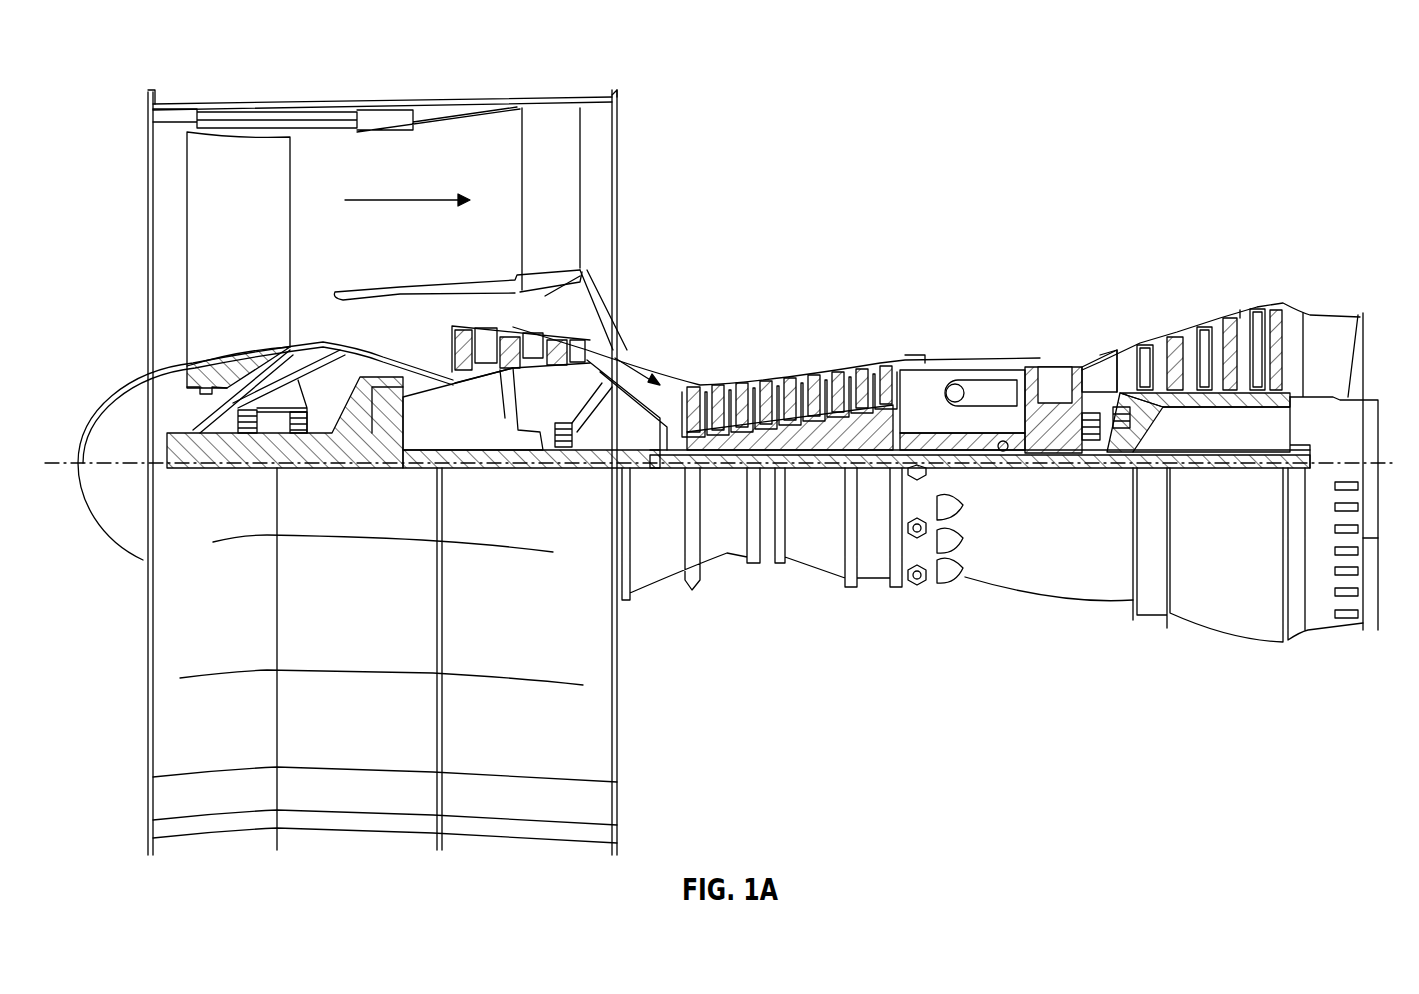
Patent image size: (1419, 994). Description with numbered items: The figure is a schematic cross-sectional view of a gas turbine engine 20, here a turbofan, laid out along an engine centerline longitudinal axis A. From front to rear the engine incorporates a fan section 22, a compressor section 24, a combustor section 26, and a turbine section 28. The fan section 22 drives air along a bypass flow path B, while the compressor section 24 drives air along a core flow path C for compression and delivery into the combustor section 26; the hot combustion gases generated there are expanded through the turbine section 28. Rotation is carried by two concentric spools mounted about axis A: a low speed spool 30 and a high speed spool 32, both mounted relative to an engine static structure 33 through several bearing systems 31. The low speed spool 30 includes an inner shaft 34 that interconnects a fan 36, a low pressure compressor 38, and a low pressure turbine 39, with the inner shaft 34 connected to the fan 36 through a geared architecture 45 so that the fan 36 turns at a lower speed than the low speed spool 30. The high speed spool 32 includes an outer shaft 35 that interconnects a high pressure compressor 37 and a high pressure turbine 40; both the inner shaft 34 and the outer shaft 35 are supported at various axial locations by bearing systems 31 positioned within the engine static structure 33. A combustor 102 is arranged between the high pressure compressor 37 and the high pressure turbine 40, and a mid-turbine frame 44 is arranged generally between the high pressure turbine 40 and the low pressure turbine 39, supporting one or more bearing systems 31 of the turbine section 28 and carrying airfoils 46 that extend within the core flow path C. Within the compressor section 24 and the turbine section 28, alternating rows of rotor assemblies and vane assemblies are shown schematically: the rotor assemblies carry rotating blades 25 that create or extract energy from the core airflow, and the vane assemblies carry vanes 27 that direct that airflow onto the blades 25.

The gas turbine engine 20 is at (1122, 152).
The fan section 22 is at (240, 84).
The compressor section 24 is at (698, 332).
The blades 25 is at (462, 340).
The combustor section 26 is at (945, 334).
The vanes 27 is at (512, 325).
The turbine section 28 is at (1214, 275).
The low speed spool 30 is at (836, 457).
The bearing systems 31 is at (250, 437).
The high speed spool 32 is at (845, 420).
The engine static structure 33 is at (884, 578).
The inner shaft 34 is at (634, 468).
The outer shaft 35 is at (1010, 465).
The fan 36 is at (266, 231).
The high pressure compressor 37 is at (782, 388).
The low pressure compressor 38 is at (548, 300).
The low pressure turbine 39 is at (1242, 318).
The high pressure turbine 40 is at (1052, 378).
The mid-turbine frame 44 is at (1117, 352).
The geared architecture 45 is at (383, 434).
The airfoils 46 is at (1098, 385).
The combustor 102 is at (958, 392).
The engine centerline longitudinal axis A is at (1388, 452).
The bypass flow path B is at (410, 198).
The core flow path C is at (620, 355).